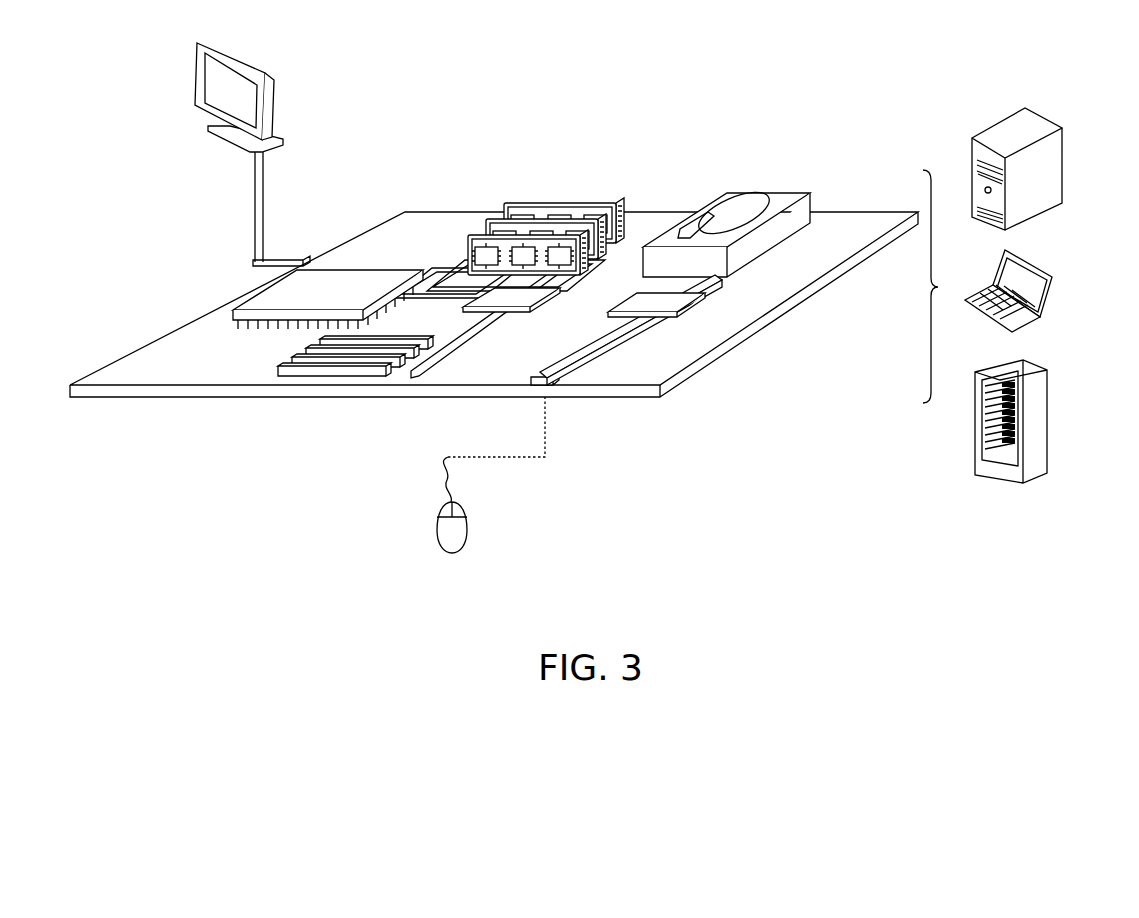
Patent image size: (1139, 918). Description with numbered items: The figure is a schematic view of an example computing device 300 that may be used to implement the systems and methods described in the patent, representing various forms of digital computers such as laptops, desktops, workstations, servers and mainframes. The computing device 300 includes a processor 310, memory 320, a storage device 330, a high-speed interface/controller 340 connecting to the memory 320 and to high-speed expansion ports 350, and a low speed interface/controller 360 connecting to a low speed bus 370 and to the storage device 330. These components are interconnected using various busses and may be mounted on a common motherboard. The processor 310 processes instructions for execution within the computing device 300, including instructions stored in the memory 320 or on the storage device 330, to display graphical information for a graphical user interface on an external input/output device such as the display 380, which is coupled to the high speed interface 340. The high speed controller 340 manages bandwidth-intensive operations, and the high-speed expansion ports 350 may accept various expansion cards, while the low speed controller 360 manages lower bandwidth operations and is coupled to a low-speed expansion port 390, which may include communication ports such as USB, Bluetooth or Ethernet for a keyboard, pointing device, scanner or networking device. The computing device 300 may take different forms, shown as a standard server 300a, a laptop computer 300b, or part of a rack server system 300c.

The computing device 300 is at (619, 88).
The standard server 300a is at (994, 122).
The laptop computer 300b is at (1037, 270).
The rack server system 300c is at (1043, 407).
The processor 310 is at (233, 313).
The memory 320 is at (556, 203).
The storage device 330 is at (764, 191).
The high-speed interface/controller 340 is at (514, 312).
The high-speed expansion ports 350 is at (280, 366).
The low speed interface/controller 360 is at (651, 295).
The low speed bus 370 is at (611, 347).
The display 380 is at (196, 80).
The low-speed expansion port 390 is at (554, 383).